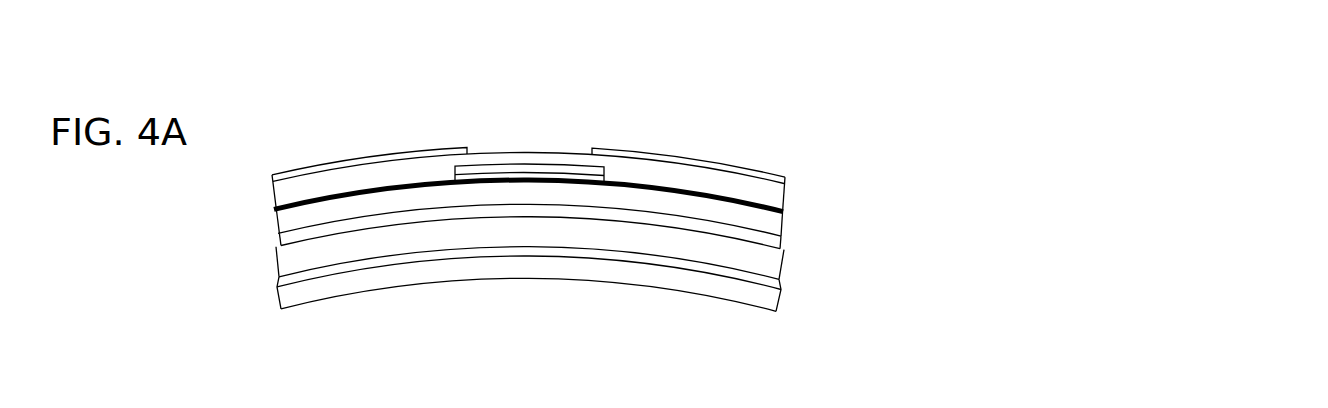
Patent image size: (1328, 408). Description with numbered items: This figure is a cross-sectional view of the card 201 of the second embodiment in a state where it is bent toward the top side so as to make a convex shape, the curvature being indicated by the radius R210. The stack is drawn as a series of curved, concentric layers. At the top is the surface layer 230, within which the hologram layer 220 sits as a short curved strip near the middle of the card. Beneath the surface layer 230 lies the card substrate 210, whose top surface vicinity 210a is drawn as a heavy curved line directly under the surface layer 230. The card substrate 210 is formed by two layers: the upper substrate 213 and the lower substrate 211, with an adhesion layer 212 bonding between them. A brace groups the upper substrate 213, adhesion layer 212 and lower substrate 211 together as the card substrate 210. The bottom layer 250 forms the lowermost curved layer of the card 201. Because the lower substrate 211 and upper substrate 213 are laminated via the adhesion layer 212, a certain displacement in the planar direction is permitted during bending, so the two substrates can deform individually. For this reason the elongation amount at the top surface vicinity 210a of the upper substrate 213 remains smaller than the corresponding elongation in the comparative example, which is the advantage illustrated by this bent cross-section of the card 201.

The card 201 is at (383, 132).
The hologram layer 220 is at (505, 163).
The surface layer 230 is at (772, 196).
The top surface vicinity 210a is at (305, 210).
The card substrate 210 is at (779, 248).
The upper substrate 213 is at (772, 216).
The adhesion layer 212 is at (773, 243).
The lower substrate 211 is at (773, 269).
The bottom layer 250 is at (773, 301).
The radius of curvature R210 is at (407, 190).